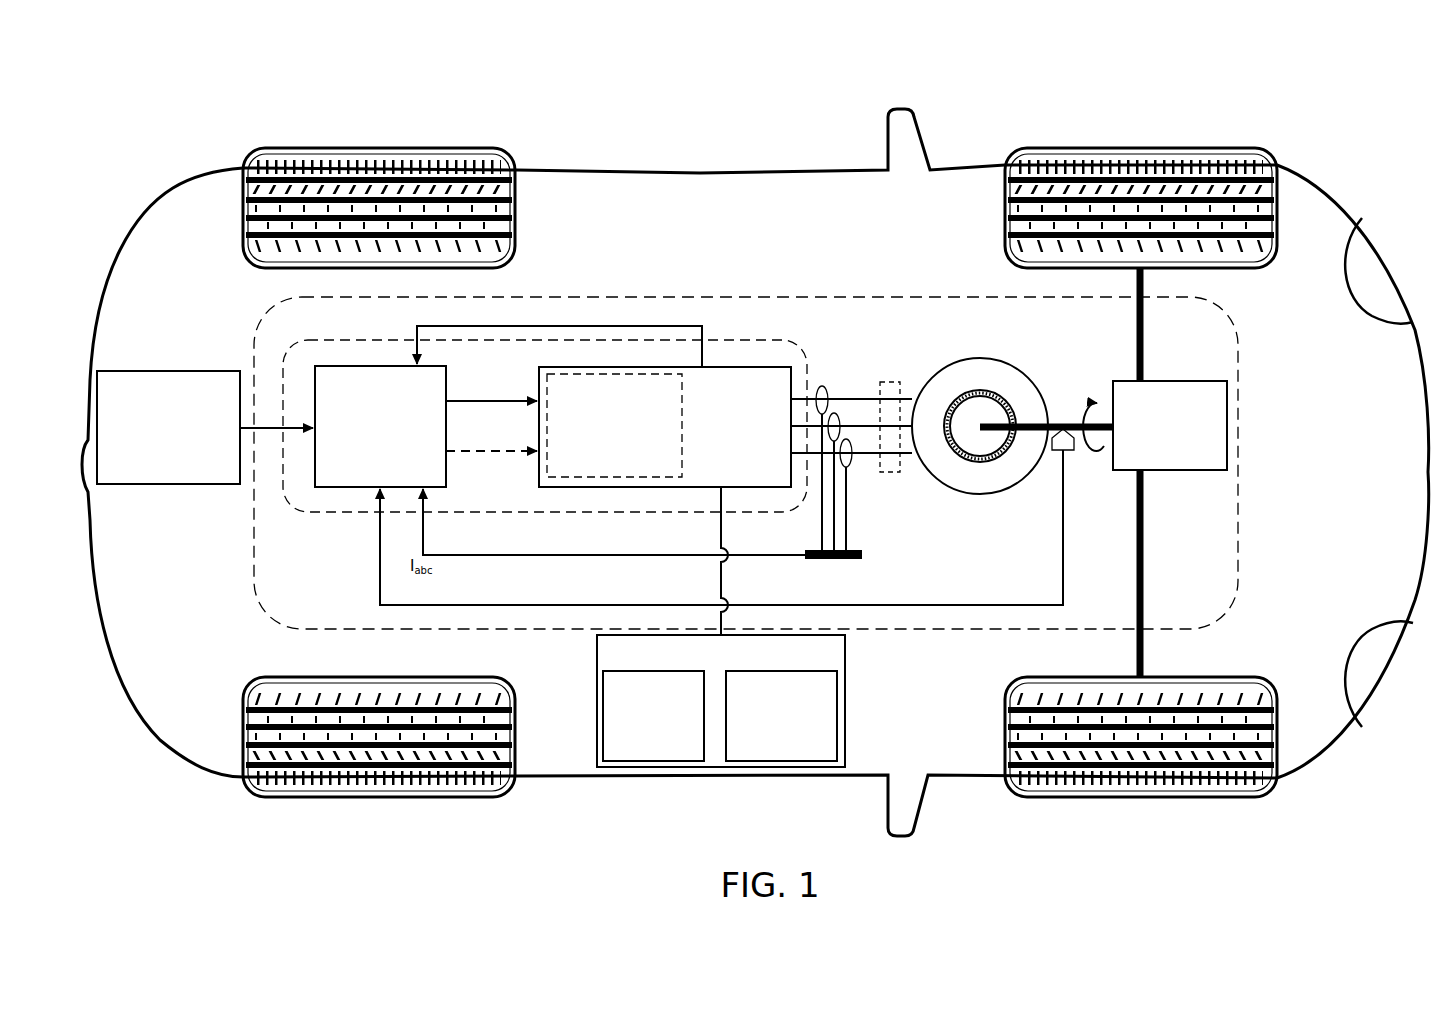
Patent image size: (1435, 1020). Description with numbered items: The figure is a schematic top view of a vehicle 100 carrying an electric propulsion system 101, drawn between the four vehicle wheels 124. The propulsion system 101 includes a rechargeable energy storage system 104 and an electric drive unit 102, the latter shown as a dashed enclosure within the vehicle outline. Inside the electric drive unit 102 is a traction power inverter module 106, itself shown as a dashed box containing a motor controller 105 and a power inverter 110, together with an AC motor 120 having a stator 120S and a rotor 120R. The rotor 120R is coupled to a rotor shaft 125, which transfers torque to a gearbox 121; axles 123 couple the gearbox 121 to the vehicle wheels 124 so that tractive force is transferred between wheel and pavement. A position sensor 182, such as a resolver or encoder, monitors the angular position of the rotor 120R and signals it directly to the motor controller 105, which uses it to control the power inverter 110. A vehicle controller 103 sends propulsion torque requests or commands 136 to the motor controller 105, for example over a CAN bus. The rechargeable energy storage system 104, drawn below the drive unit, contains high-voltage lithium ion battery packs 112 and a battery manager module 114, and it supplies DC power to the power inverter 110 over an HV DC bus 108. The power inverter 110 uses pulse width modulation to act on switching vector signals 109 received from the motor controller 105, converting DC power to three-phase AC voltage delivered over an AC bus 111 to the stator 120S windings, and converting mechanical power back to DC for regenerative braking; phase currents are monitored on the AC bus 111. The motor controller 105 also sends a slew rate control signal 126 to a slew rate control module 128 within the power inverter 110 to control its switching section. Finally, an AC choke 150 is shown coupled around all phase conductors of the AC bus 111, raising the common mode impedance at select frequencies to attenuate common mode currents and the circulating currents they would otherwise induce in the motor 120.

The vehicle 100 is at (697, 170).
The electric propulsion system 101 is at (1254, 405).
The electric drive unit (EDU) 102 is at (558, 297).
The vehicle controller 103 is at (168, 427).
The rechargeable energy storage system (RESS) 104 is at (721, 701).
The motor controller 105 is at (380, 426).
The traction power inverter module (TPIM) 106 is at (367, 340).
The HV DC bus 108 is at (720, 626).
The switching vector signals 109 is at (510, 405).
The power inverter 110 is at (665, 427).
The AC bus 111 is at (855, 352).
The battery packs 112 is at (653, 716).
The battery manager module 114 is at (838, 700).
The AC motor 120 is at (997, 401).
The stator 120S is at (957, 372).
The rotor 120R is at (1000, 392).
The gearbox 121 is at (1170, 425).
The axles 123 is at (1136, 352).
The vehicle wheels 124 is at (398, 148).
The rotor shaft 125 is at (1063, 427).
The slew rate control signal 126 is at (510, 455).
The slew rate control module 128 is at (569, 478).
The propulsion torque requests or commands 136 is at (272, 430).
The AC choke 150 is at (882, 468).
The position sensor 182 is at (1058, 457).